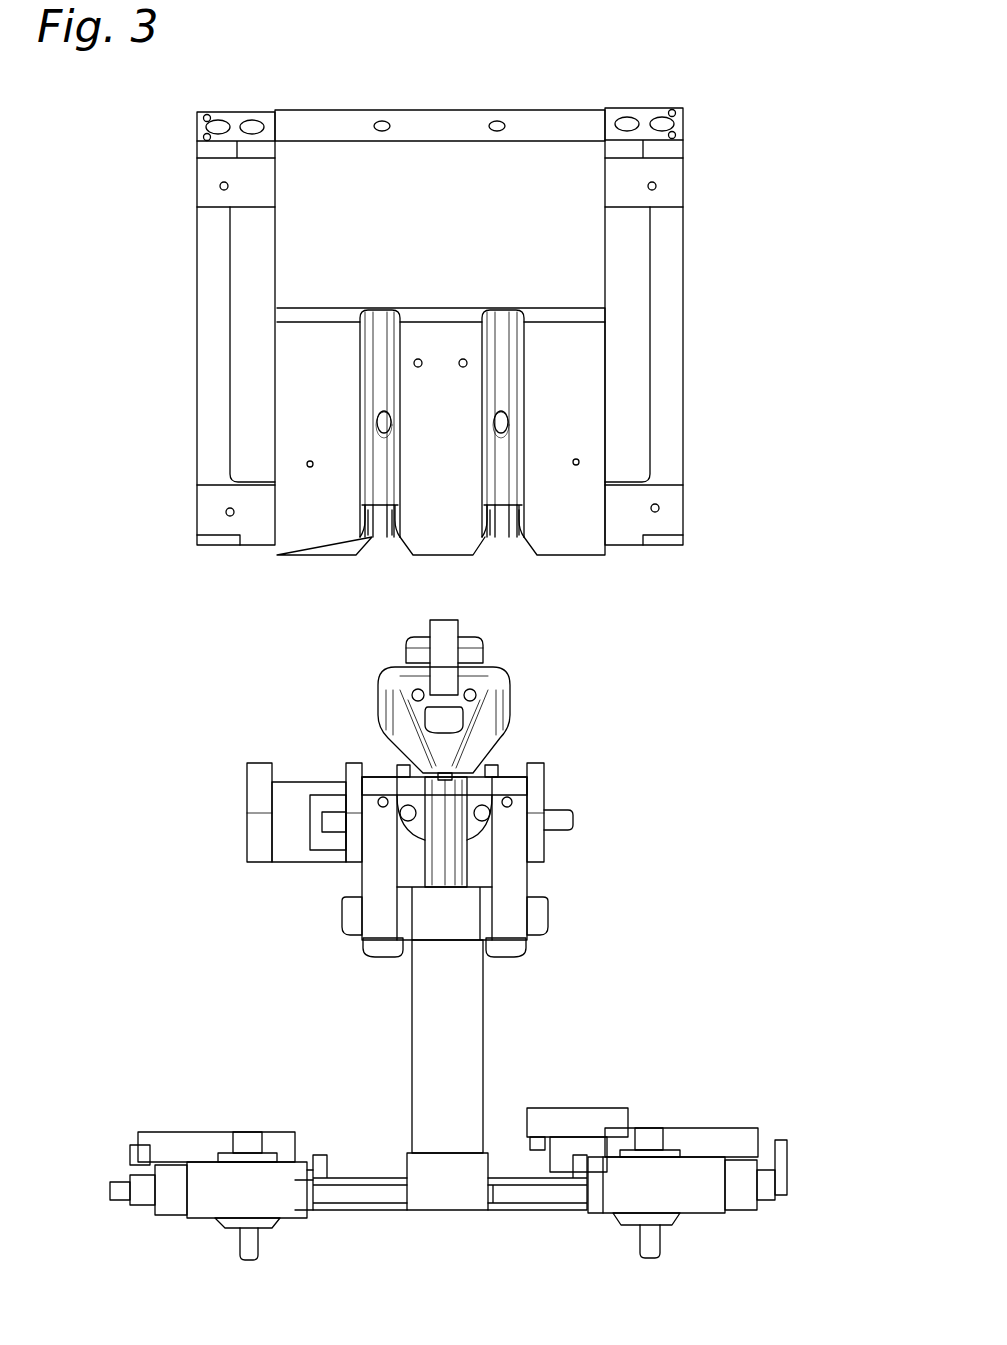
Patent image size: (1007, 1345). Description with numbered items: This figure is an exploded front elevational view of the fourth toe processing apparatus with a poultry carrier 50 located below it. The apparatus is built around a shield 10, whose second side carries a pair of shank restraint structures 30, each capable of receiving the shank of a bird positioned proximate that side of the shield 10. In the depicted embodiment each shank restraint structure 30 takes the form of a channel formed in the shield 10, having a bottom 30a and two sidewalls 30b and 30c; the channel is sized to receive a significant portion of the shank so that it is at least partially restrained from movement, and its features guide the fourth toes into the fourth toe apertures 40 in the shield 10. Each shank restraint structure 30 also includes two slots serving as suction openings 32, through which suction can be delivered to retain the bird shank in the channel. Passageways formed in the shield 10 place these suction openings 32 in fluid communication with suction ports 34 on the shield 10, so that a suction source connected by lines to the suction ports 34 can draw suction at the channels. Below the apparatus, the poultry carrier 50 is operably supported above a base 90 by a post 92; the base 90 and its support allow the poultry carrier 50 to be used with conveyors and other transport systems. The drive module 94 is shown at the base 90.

The shield 10 is at (686, 250).
The shank restraint structure 30 is at (380, 537).
The channel bottom 30a is at (375, 537).
The channel sidewall 30b is at (370, 537).
The channel sidewall 30c is at (393, 537).
The suction opening 32 is at (383, 312).
The suction port 34 is at (205, 127).
The fourth toe aperture 40 is at (384, 412).
The poultry carrier 50 is at (608, 770).
The base 90 is at (380, 1197).
The post 92 is at (428, 1043).
The drive module 94 is at (700, 1110).